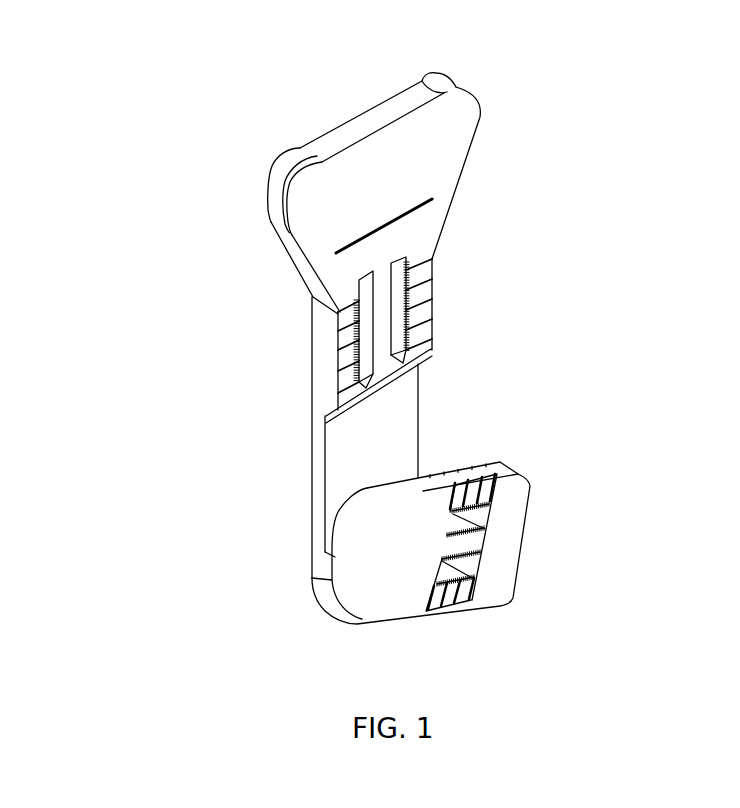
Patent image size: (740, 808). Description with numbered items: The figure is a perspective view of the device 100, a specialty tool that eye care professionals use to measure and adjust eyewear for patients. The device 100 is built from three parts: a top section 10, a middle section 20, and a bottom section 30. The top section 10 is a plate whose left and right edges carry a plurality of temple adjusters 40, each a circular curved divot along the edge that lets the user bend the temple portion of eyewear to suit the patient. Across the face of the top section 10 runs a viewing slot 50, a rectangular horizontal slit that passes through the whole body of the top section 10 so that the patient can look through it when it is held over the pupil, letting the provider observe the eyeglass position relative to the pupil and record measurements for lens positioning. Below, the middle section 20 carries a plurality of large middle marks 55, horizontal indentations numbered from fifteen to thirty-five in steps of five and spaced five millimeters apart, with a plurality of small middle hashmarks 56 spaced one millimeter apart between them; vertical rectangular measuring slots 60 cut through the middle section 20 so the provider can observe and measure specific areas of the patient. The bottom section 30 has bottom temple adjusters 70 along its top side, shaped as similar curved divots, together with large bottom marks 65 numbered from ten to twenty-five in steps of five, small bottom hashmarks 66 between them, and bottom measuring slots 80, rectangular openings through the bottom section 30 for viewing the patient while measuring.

The device 100 is at (156, 91).
The top section 10 is at (455, 150).
The middle section 20 is at (325, 360).
The bottom section 30 is at (505, 552).
The temple adjusters 40 is at (437, 78).
The viewing slot 50 is at (397, 200).
The large middle marks 55 is at (440, 258).
The small middle hashmarks 56 is at (330, 318).
The measuring slots 60 is at (353, 288).
The large bottom marks 65 is at (509, 488).
The small bottom hashmarks 66 is at (463, 597).
The bottom temple adjusters 70 is at (324, 535).
The bottom measuring slots 80 is at (450, 525).